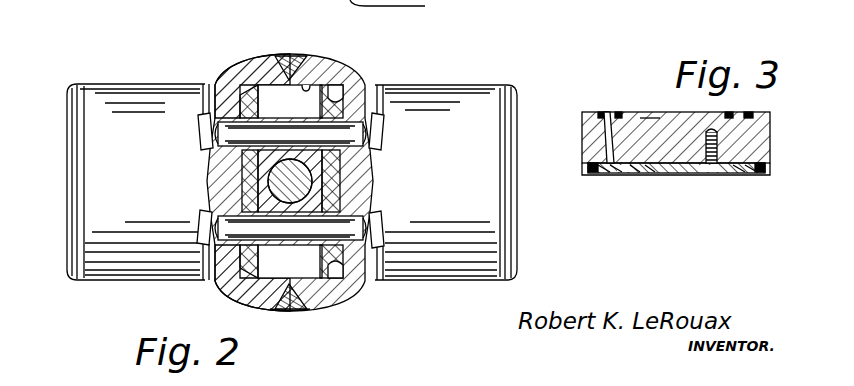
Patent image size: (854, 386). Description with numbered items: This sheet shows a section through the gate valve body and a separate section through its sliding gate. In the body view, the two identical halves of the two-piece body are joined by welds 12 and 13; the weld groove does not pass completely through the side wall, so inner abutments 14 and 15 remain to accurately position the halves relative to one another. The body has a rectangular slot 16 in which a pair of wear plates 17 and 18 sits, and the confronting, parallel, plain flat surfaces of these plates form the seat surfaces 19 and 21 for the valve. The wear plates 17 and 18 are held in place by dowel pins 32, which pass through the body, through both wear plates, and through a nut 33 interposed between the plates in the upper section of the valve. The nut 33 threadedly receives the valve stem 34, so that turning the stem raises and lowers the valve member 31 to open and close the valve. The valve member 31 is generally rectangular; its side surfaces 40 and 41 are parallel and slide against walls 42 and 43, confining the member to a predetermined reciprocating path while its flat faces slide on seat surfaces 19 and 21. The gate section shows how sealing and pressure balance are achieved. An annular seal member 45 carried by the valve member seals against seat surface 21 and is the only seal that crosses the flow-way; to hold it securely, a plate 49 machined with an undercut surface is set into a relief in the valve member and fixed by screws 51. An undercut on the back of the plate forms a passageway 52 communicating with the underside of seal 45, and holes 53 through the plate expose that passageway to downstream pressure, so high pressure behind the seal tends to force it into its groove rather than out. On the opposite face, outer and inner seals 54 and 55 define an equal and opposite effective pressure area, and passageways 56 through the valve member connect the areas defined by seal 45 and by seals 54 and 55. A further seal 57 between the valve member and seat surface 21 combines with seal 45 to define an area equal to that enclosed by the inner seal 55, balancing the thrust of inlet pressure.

In FIG. 2, the weld 12 is at (290, 62).
In FIG. 2, the weld 13 is at (290, 312).
In FIG. 2, the inner abutment 14 is at (272, 78).
In FIG. 2, the inner abutment 15 is at (301, 296).
In FIG. 2, the rectangular slot 16 is at (335, 95).
In FIG. 2, the wear plate 17 is at (333, 178).
In FIG. 2, the wear plate 18 is at (247, 178).
In FIG. 2, the seat surface 19 is at (232, 172).
In FIG. 2, the seat surface 21 is at (352, 165).
In FIG. 2, the dowel pin 32 is at (358, 80).
In FIG. 2, the nut 33 is at (343, 200).
In FIG. 2, the valve stem 34 is at (277, 189).
In FIG. 2, the side surface 40 is at (306, 84).
In FIG. 2, the side surface 41 is at (333, 302).
In FIG. 2, the wall 42 is at (248, 68).
In FIG. 2, the wall 43 is at (258, 306).
In FIG. 3, the valve member 31 is at (663, 145).
In FIG. 3, the annular seal member 45 is at (603, 175).
In FIG. 3, the plate 49 is at (680, 175).
In FIG. 3, the screw 51 is at (705, 170).
In FIG. 3, the passageway 52 is at (647, 130).
In FIG. 3, the hole 53 is at (633, 175).
In FIG. 3, the outer seal member 54 is at (600, 112).
In FIG. 3, the inner seal member 55 is at (617, 112).
In FIG. 3, the passageway 56 is at (620, 112).
In FIG. 3, the seal 57 is at (590, 175).